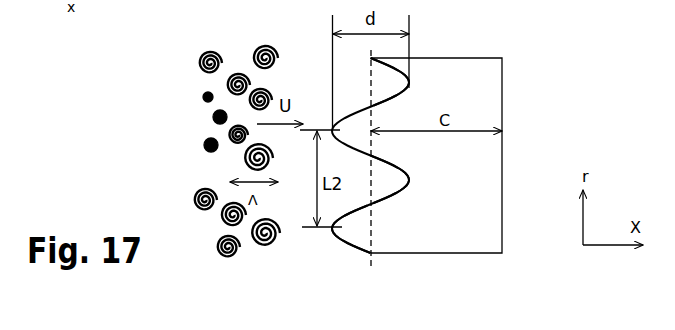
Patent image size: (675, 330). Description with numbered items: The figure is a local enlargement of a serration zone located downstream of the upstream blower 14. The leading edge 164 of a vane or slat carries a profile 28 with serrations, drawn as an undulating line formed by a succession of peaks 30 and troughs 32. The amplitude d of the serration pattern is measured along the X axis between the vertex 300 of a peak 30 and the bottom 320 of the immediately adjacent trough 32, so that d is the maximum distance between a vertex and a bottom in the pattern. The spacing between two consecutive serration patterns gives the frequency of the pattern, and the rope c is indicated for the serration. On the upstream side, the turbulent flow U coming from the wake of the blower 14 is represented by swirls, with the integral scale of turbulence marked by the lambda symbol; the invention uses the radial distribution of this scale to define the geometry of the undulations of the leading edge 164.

The upstream blower 14 is at (206, 151).
The profile 28 is at (393, 103).
The peak 30 is at (342, 233).
The trough 32 is at (397, 185).
The leading edge 164 is at (355, 248).
The vertex 300 is at (332, 124).
The bottom 320 is at (409, 89).